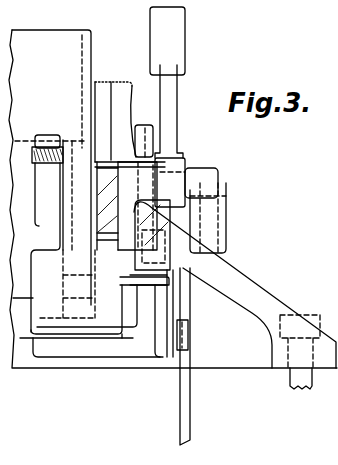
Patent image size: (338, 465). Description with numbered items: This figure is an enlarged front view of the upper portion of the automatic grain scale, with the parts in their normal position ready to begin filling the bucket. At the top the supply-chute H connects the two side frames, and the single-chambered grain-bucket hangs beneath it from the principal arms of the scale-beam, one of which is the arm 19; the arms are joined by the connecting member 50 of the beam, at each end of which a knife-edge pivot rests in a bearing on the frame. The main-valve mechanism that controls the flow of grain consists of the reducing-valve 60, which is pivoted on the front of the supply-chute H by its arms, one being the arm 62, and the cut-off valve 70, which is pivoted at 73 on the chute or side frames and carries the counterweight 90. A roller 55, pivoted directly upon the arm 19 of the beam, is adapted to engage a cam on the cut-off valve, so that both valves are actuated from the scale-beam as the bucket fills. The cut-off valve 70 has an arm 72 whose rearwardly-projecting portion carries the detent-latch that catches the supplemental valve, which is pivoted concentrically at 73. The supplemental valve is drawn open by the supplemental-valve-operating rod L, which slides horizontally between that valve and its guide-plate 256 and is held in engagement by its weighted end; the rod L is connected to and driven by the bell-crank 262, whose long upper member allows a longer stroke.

The supply-chute H is at (173, 199).
The principal arm of the scale-beam 19 is at (128, 105).
The connecting member of the scale-beam 50 is at (95, 92).
The roller 55 is at (186, 171).
The reducing-valve 60 is at (84, 292).
The arm of the reducing-valve 62 is at (51, 233).
The cut-off valve 70 is at (63, 331).
The arm of the cut-off valve 72 is at (178, 95).
The pivot of the cut-off valve 73 is at (212, 250).
The counterweight of the cut-off valve 90 is at (167, 41).
The supplemental-valve-operating rod L is at (175, 312).
The guide-plate 256 is at (185, 300).
The bell-crank 262 is at (191, 390).